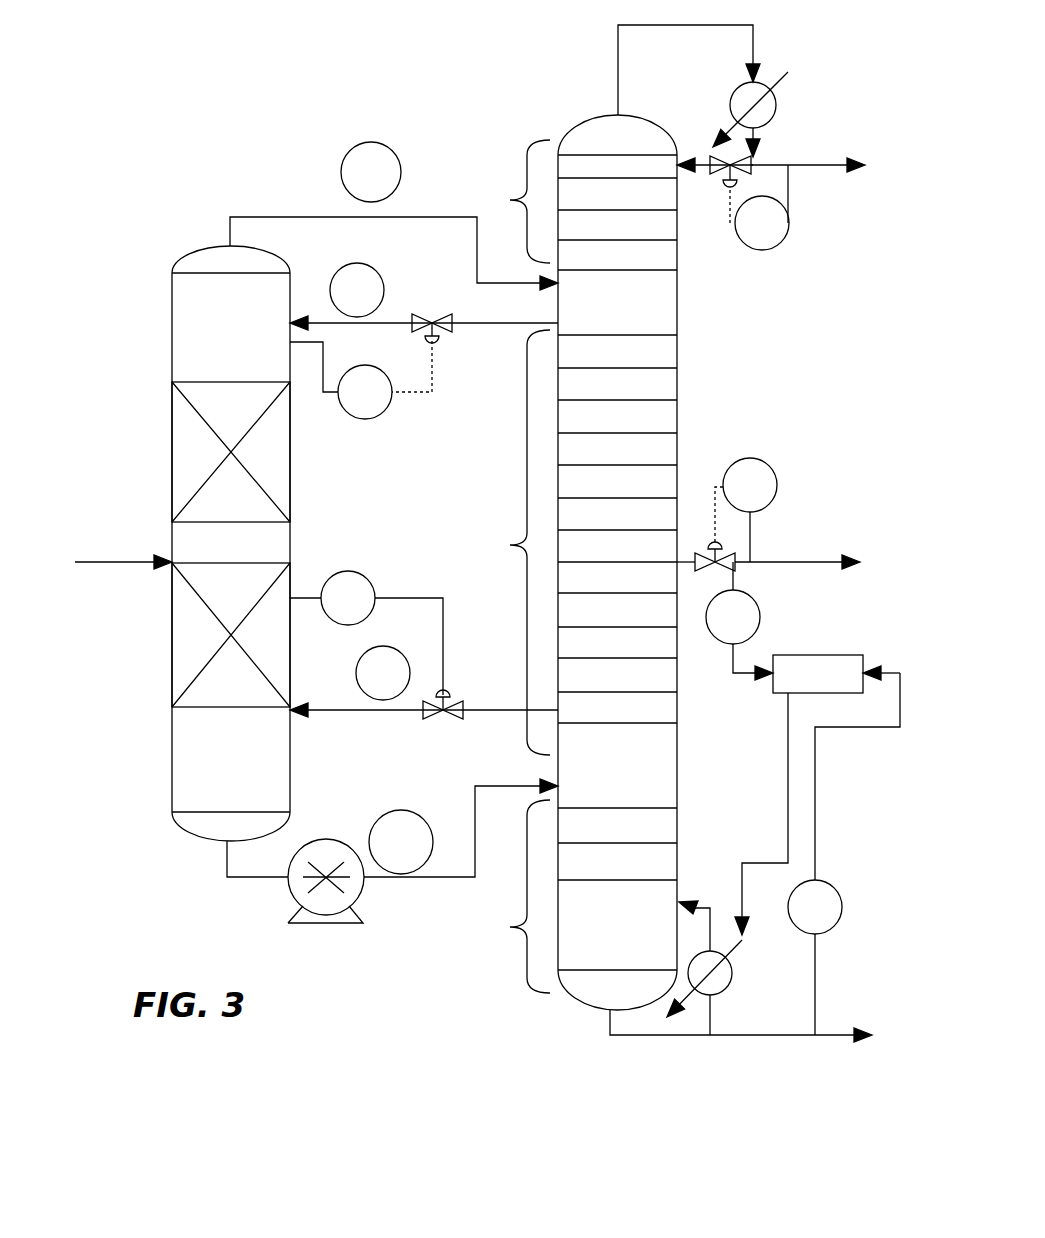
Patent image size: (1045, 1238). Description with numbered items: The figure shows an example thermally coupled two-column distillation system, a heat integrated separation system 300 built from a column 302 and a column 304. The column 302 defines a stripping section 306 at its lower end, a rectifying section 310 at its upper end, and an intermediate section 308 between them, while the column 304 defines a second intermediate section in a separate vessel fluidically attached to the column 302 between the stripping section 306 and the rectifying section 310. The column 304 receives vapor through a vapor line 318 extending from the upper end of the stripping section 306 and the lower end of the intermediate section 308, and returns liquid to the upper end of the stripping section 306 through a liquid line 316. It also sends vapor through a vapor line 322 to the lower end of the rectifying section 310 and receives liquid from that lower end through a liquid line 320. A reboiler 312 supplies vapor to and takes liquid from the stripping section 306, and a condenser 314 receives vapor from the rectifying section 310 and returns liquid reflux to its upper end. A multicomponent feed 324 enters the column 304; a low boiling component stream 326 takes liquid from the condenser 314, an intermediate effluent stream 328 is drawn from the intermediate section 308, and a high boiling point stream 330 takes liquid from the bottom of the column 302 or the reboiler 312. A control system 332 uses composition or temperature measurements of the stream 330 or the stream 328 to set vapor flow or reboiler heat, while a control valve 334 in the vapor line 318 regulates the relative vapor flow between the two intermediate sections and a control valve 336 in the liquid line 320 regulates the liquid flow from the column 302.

The separation system 300 is at (432, 64).
The column 302 is at (678, 300).
The column 304 is at (172, 317).
The stripping section 306 is at (506, 896).
The intermediate section 308 is at (507, 542).
The rectifying section 310 is at (506, 201).
The reboiler 312 is at (716, 995).
The condenser 314 is at (778, 118).
The liquid line 316 is at (243, 880).
The vapor line 318 is at (464, 709).
The liquid line 320 is at (507, 326).
The vapor line 322 is at (282, 217).
The multicomponent feed 324 is at (136, 562).
The low boiling component stream 326 is at (826, 165).
The intermediate effluent stream 328 is at (825, 560).
The high boiling point stream 330 is at (843, 1033).
The control system 332 is at (818, 655).
The control valve 334 is at (438, 720).
The control valve 336 is at (413, 315).